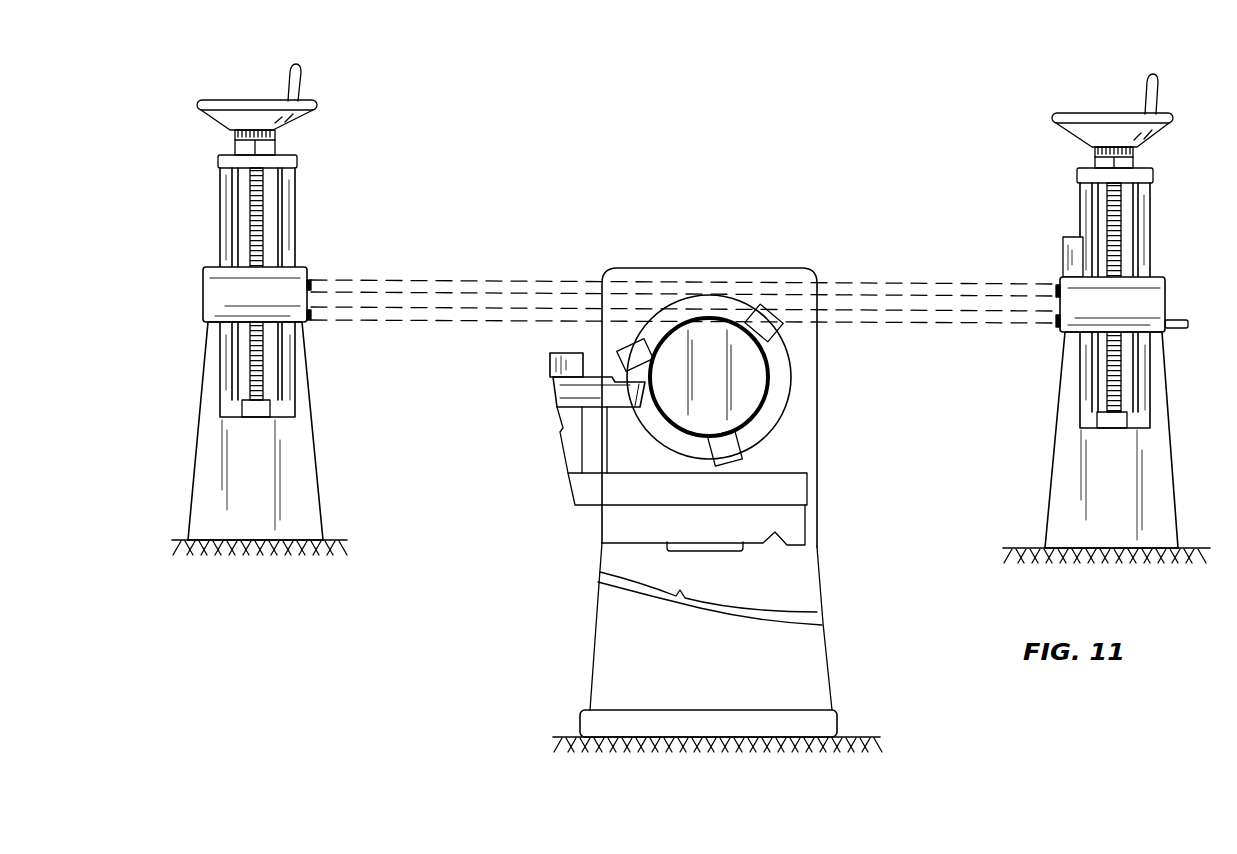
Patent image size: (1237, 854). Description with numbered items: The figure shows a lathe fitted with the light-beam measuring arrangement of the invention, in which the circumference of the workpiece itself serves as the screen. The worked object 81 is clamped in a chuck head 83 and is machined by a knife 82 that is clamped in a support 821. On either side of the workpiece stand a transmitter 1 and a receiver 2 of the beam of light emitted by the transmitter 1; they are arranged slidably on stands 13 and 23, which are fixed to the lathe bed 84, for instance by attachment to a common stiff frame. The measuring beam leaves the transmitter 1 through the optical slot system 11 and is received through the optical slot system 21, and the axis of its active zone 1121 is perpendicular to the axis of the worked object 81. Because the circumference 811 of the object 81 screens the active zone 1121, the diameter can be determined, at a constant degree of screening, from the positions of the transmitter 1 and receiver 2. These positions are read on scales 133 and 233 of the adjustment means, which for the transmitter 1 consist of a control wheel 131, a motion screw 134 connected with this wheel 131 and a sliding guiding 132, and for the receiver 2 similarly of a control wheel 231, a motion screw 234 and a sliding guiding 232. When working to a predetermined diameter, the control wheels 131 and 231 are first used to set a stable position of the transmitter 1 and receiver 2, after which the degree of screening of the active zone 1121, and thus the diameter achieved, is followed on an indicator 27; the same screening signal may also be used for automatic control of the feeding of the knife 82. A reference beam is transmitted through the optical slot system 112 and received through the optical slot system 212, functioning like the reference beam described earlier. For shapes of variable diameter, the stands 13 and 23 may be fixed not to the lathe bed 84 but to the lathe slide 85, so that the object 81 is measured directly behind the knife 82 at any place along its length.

The transmitter 1 is at (215, 290).
The optical slot system 11 is at (312, 318).
The optical slot system 112 is at (311, 285).
The active zone 1121 is at (500, 318).
The stand 13 is at (302, 453).
The control wheel 131 is at (314, 106).
The sliding guiding 132 is at (300, 212).
The scale 133 is at (278, 147).
The motion screw 134 is at (253, 237).
The receiver 2 is at (1152, 308).
The optical slot system 21 is at (1056, 327).
The optical slot system 212 is at (1058, 290).
The stand 23 is at (1157, 462).
The control wheel 231 is at (1076, 118).
The sliding guiding 232 is at (1143, 205).
The scale 233 is at (1135, 158).
The motion screw 234 is at (1108, 218).
The indicator 27 is at (1064, 245).
The worked object 81 is at (750, 375).
The circumference 811 is at (690, 320).
The knife 82 is at (563, 395).
The support 821 is at (553, 365).
The chuck head 83 is at (785, 415).
The lathe bed 84 is at (795, 562).
The lathe slide 85 is at (792, 525).